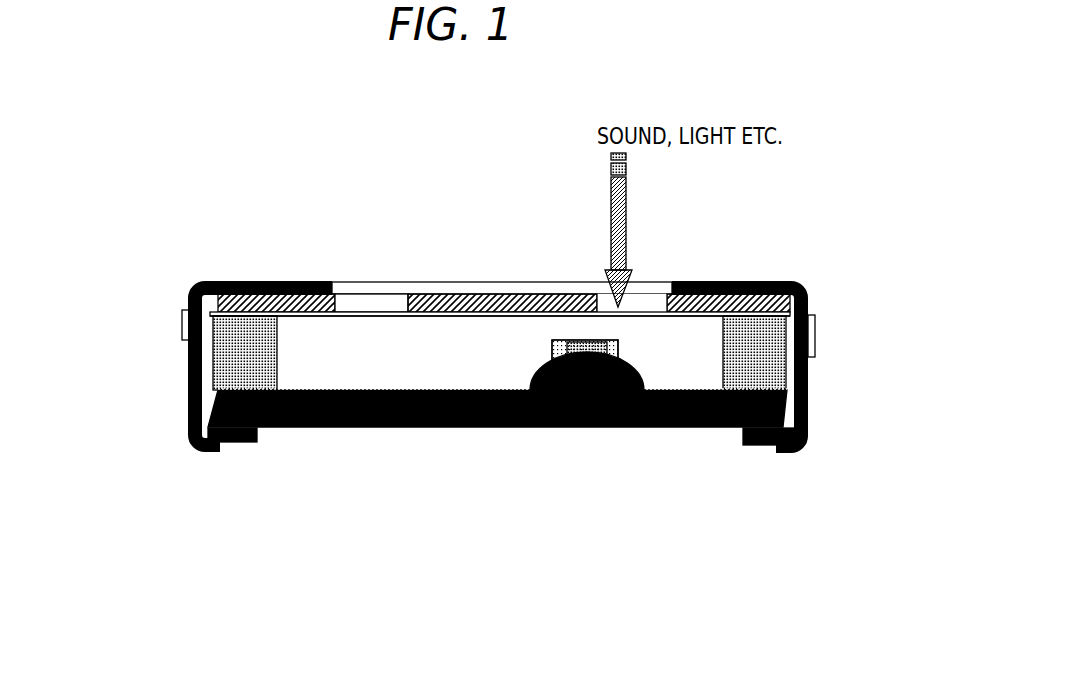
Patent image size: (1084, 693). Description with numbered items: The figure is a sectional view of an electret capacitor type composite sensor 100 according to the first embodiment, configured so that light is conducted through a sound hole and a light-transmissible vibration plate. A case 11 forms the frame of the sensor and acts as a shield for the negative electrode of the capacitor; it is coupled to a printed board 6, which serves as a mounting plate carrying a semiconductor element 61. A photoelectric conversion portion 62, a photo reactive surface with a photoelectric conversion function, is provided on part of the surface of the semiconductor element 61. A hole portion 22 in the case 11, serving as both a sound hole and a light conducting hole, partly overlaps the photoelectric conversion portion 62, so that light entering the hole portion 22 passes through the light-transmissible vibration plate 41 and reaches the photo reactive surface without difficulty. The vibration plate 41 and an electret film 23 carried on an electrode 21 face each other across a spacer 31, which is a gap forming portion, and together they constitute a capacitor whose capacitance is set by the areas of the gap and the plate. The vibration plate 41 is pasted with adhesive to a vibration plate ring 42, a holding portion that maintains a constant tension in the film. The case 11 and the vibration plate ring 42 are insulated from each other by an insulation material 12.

The electret capacitor type composite sensor 100 is at (110, 300).
The case 11 is at (789, 272).
The insulation material 12 is at (452, 514).
The electrode 21 is at (449, 293).
The hole portion 22 is at (634, 294).
The electret film 23 is at (500, 452).
The spacer 31 is at (241, 297).
The vibration plate 41 is at (392, 326).
The vibration plate ring 42 is at (332, 453).
The printed board 6 is at (704, 437).
The semiconductor element 61 is at (587, 434).
The photoelectric conversion portion 62 is at (381, 247).